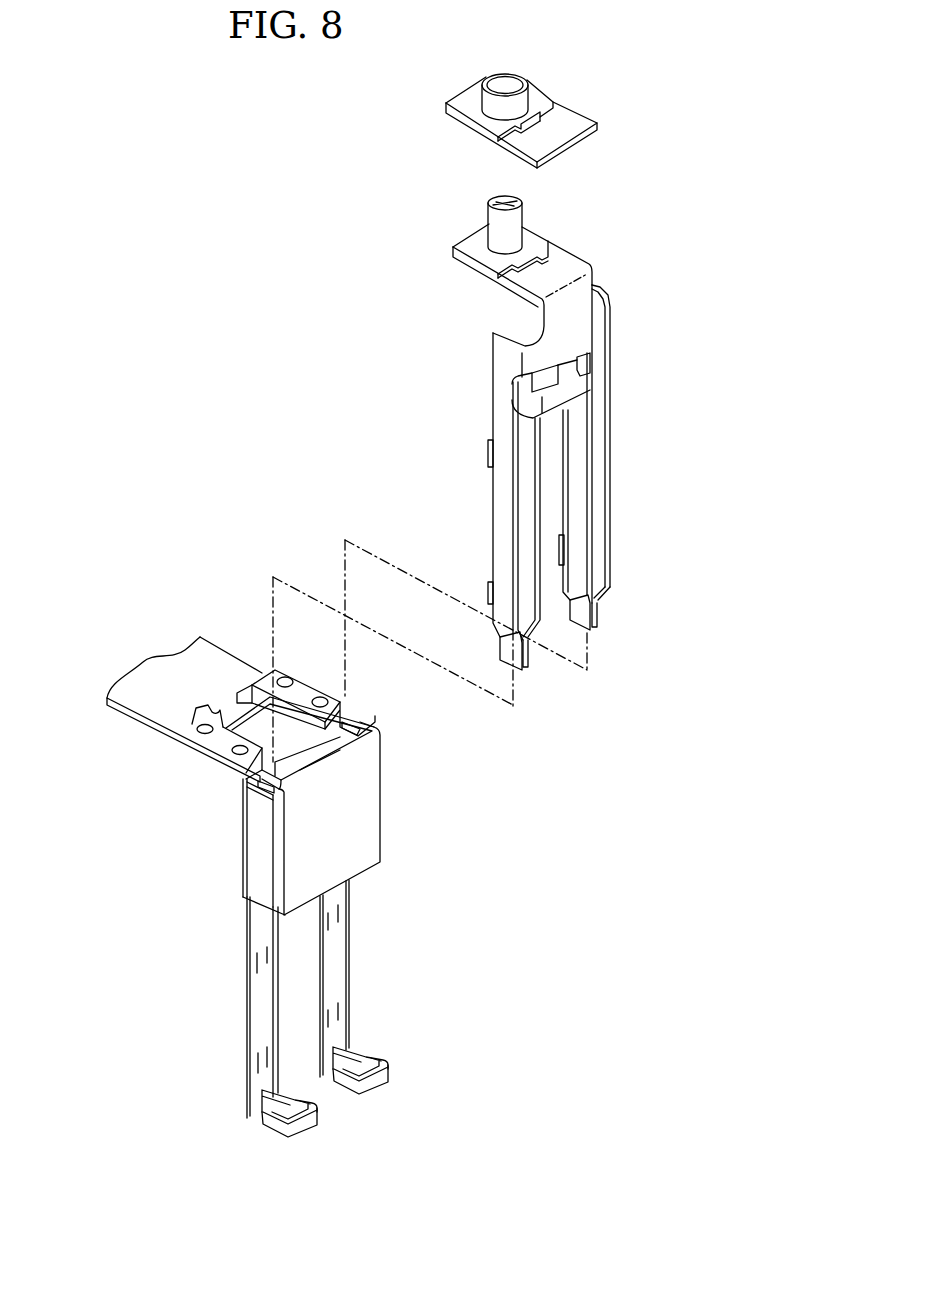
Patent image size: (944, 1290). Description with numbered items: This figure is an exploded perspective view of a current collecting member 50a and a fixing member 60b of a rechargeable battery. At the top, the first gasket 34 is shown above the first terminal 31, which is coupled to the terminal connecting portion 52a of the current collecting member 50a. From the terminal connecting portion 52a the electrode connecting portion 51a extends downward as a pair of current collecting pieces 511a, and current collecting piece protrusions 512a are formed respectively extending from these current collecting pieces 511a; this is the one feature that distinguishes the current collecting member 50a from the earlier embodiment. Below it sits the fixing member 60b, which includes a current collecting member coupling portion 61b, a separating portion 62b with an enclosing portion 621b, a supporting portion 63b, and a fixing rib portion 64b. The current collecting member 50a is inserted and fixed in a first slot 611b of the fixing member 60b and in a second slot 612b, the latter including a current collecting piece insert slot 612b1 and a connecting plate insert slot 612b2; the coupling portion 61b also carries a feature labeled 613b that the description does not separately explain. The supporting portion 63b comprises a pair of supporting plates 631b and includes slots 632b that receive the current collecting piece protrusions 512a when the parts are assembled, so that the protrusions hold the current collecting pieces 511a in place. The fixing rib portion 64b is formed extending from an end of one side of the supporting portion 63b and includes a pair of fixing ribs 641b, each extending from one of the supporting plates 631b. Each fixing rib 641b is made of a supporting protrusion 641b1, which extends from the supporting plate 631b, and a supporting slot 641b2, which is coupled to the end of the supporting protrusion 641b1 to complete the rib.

The first gasket 34 is at (538, 99).
The first terminal 31 is at (514, 216).
The current collecting member 50a is at (539, 423).
The terminal connecting portion 52a is at (578, 262).
The electrode connecting portion 51a is at (612, 440).
The current collecting pieces 511a is at (612, 484).
The current collecting piece protrusions 512a is at (559, 551).
The fixing member 60b is at (299, 858).
The current collecting member coupling portion 61b is at (145, 690).
The first slot 611b is at (257, 733).
The second slot 612b is at (432, 745).
The current collecting piece insert slot 612b1 is at (390, 714).
The connecting plate insert slot 612b2 is at (323, 750).
The tabs 613b is at (186, 741).
The separating portion 62b is at (358, 806).
The enclosing portion 621b is at (258, 846).
The supporting portion 63b is at (305, 999).
The supporting plates 631b is at (324, 957).
The slots 632b is at (345, 912).
The fixing rib portion 64b is at (312, 1088).
The fixing ribs 641b is at (279, 1103).
The supporting protrusion 641b1 is at (263, 1096).
The supporting slot 641b2 is at (280, 1131).